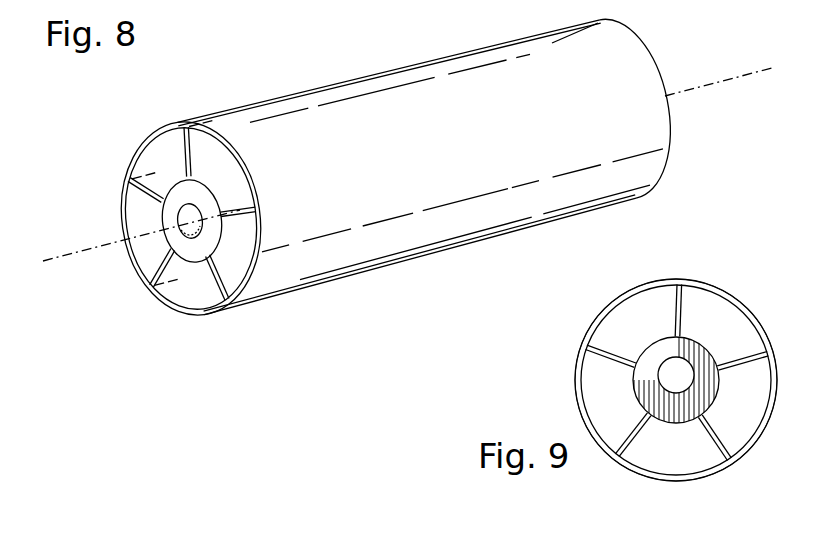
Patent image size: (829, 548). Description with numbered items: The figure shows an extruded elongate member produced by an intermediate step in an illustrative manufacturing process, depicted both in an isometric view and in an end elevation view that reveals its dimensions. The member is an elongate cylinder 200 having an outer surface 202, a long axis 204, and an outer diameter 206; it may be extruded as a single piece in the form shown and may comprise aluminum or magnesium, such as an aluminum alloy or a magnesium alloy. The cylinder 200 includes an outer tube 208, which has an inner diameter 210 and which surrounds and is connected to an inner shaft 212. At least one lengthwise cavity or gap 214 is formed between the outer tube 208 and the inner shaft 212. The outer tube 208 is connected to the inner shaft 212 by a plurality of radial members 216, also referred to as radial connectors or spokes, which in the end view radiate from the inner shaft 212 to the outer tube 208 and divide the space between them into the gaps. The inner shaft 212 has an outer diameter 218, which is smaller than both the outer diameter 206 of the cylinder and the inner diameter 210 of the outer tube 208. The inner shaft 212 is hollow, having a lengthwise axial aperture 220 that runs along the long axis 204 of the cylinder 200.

In FIG. 8, the elongate cylinder 200 is at (460, 33).
In FIG. 9, the elongate cylinder 200 is at (550, 386).
In FIG. 8, the outer surface 202 is at (479, 148).
In FIG. 8, the long axis 204 is at (77, 252).
In FIG. 9, the outer diameter 206 is at (575, 352).
In FIG. 8, the outer tube 208 is at (254, 284).
In FIG. 9, the inner diameter 210 is at (582, 352).
In FIG. 8, the inner shaft 212 is at (182, 187).
In FIG. 8, the lengthwise cavity or gap 214 is at (142, 206).
In FIG. 8, the radial members 216 is at (155, 182).
In FIG. 9, the radial members 216 is at (677, 373).
In FIG. 9, the outer diameter of inner shaft 218 is at (718, 380).
In FIG. 8, the lengthwise axial aperture 220 is at (190, 232).